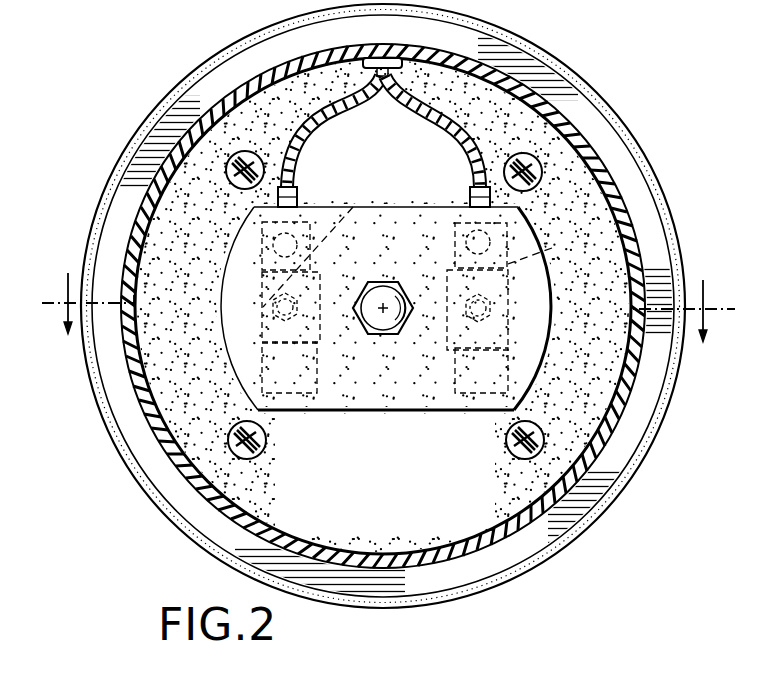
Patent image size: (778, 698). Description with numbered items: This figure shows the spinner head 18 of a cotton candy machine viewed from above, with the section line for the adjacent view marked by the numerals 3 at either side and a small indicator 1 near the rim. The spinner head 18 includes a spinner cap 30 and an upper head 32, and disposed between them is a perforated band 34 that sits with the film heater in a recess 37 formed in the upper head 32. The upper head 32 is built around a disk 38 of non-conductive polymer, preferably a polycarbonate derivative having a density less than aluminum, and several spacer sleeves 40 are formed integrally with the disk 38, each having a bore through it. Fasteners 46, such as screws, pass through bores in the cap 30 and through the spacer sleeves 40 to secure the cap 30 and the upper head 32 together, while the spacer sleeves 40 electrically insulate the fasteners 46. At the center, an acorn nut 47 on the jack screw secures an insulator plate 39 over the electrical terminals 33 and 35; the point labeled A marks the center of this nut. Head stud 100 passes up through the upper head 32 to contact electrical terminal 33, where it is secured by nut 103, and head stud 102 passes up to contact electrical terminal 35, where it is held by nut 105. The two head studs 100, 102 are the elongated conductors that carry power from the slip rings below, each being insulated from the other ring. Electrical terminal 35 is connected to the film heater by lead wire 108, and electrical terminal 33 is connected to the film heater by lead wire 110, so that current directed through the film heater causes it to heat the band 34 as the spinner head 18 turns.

The spinner head 18 is at (674, 100).
The section indicator 1 is at (616, 146).
The section line 3- 3 is at (385, 303).
The spinner cap 30 is at (614, 187).
The upper head 32 is at (618, 146).
The perforated band 34 is at (663, 209).
The recess 37 is at (100, 403).
The disk 38 is at (83, 362).
The insulator plate 39 is at (408, 412).
The spacer sleeve 40 is at (523, 156).
The fasteners 46 is at (533, 178).
The acorn nut 47 is at (410, 322).
The center axis A is at (383, 316).
The head stud 100 is at (258, 302).
The head stud 102 is at (482, 369).
The nut 103 is at (312, 250).
The nut 105 is at (504, 283).
The electrical terminal 33 is at (349, 207).
The electrical terminal 35 is at (520, 245).
The lead wire 108 is at (467, 136).
The lead wire 110 is at (336, 120).